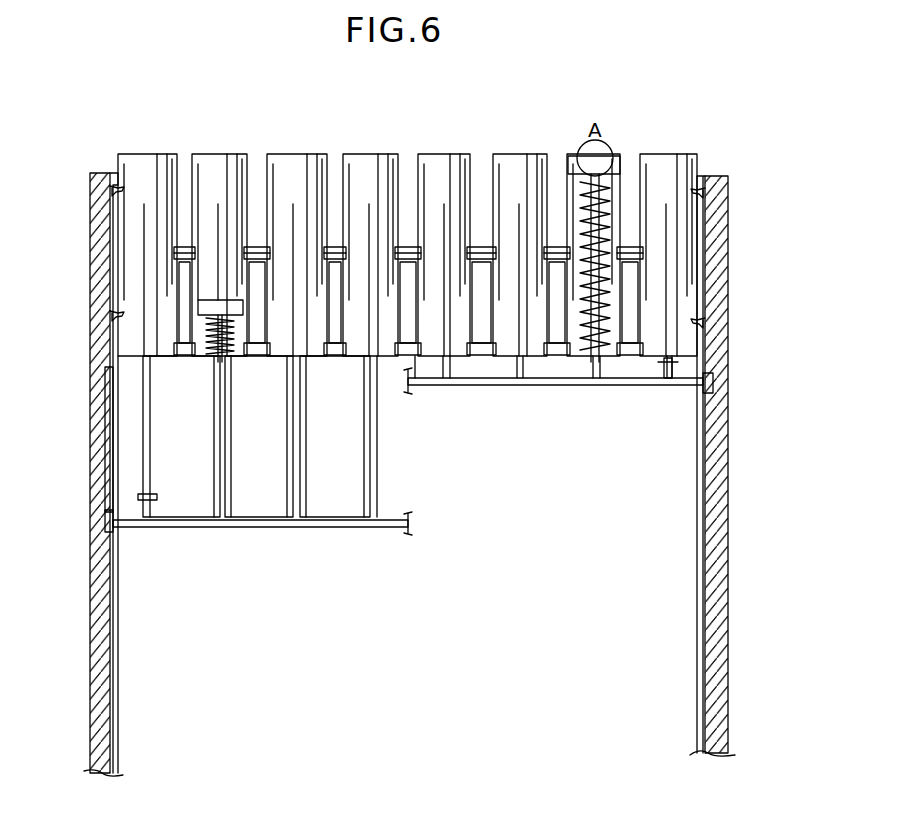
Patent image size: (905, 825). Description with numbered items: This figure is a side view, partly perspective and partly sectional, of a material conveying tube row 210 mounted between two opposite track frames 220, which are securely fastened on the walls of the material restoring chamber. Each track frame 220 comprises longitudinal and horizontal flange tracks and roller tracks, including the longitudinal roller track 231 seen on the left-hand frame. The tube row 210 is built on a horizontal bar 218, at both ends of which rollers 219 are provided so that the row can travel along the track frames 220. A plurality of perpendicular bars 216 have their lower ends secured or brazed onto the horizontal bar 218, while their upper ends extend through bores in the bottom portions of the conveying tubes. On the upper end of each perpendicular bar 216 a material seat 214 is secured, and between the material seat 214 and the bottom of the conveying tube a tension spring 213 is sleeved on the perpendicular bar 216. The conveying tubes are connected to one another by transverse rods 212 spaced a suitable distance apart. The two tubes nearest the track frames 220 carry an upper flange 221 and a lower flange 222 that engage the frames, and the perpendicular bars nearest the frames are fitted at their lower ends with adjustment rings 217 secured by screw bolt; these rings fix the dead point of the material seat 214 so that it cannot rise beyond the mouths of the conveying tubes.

The material conveying tube row 210 is at (292, 160).
The transverse rod 212 is at (332, 348).
The tension spring 213 is at (580, 193).
The material seat 214 is at (238, 300).
The perpendicular bar 216 is at (372, 453).
The adjustment ring 217 is at (152, 498).
The horizontal bar 218 is at (387, 522).
The roller 219 is at (107, 532).
The track frame 220 is at (727, 537).
The upper flange 221 is at (112, 190).
The lower flange 222 is at (112, 314).
The longitudinal roller track 231 is at (108, 392).